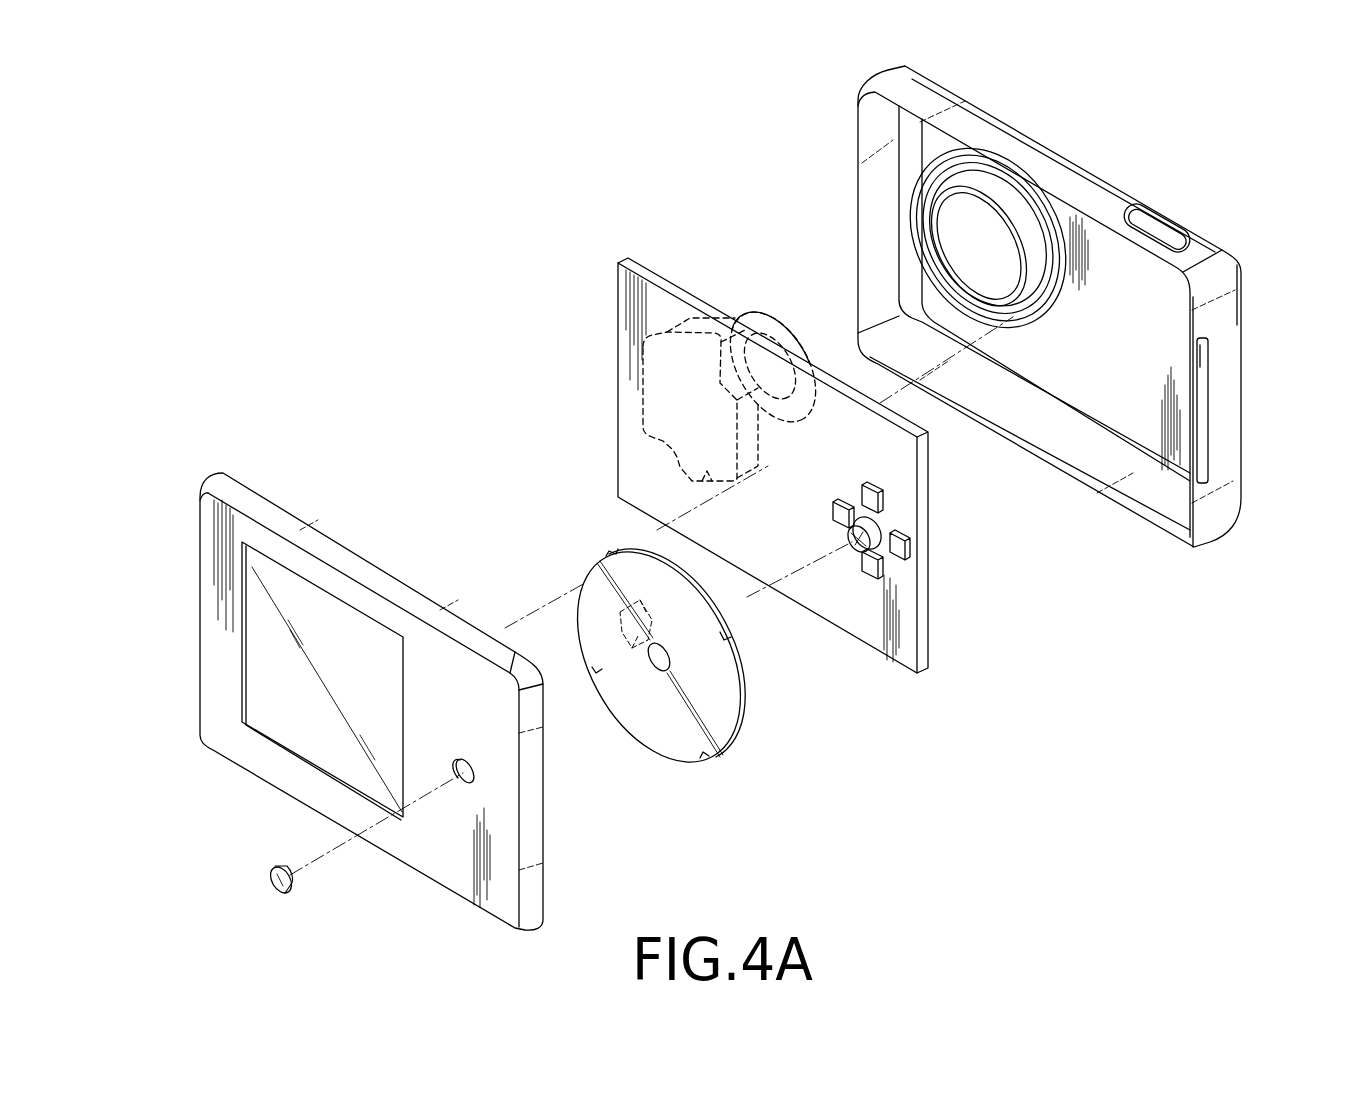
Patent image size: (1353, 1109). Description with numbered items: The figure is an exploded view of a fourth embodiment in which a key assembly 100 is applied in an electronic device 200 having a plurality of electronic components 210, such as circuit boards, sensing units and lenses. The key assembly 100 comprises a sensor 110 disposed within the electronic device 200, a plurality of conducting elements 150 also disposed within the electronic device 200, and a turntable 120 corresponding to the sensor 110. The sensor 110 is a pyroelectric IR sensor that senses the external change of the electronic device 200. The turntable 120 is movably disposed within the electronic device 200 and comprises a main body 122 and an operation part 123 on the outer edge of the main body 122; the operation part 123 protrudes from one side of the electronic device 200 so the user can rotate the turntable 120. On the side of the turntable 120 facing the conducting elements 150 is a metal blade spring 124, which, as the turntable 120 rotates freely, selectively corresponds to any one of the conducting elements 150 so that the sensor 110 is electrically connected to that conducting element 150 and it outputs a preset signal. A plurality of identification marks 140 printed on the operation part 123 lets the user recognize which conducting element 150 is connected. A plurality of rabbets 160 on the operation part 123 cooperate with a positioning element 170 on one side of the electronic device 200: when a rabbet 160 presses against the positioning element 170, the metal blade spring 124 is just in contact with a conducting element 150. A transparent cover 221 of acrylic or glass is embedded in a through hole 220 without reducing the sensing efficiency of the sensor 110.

The key assembly 100 is at (713, 436).
The sensor 110 is at (885, 568).
The turntable 120 is at (594, 609).
The main body 122 is at (647, 687).
The operation part 123 is at (727, 718).
The metal blade spring 124 is at (638, 632).
The identification marks 140 is at (733, 697).
The conducting elements 150 is at (882, 530).
The rabbets 160 is at (612, 551).
The positioning element 170 is at (1205, 360).
The electronic device 200 is at (1093, 193).
The electronic components 210 is at (738, 340).
The through hole 220 is at (473, 783).
The transparent cover 221 is at (267, 873).